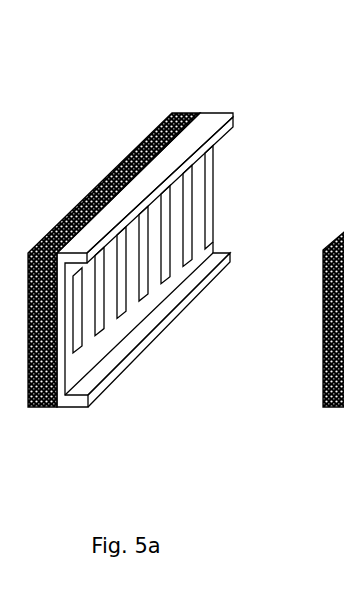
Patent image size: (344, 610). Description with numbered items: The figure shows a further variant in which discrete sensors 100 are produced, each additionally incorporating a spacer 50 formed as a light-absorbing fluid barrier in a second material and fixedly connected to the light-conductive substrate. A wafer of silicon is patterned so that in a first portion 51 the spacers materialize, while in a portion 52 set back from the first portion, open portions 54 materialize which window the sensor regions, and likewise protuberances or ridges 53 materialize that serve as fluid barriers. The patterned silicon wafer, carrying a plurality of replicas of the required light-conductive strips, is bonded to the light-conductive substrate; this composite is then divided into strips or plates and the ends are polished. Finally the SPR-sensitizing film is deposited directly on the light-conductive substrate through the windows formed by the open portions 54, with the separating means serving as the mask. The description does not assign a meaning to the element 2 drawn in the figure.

The discrete sensor 100 is at (37, 418).
The frame 2 is at (78, 355).
The spacer 50 is at (215, 122).
The first portion 51 is at (231, 117).
The setback portion 52 is at (188, 304).
The protuberances or ridges 53 is at (160, 272).
The open portions 54 is at (123, 305).